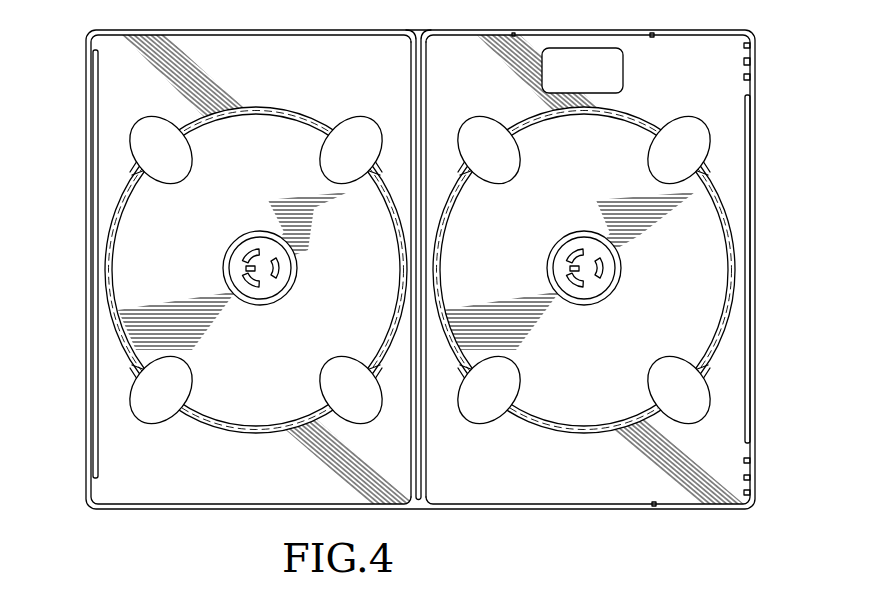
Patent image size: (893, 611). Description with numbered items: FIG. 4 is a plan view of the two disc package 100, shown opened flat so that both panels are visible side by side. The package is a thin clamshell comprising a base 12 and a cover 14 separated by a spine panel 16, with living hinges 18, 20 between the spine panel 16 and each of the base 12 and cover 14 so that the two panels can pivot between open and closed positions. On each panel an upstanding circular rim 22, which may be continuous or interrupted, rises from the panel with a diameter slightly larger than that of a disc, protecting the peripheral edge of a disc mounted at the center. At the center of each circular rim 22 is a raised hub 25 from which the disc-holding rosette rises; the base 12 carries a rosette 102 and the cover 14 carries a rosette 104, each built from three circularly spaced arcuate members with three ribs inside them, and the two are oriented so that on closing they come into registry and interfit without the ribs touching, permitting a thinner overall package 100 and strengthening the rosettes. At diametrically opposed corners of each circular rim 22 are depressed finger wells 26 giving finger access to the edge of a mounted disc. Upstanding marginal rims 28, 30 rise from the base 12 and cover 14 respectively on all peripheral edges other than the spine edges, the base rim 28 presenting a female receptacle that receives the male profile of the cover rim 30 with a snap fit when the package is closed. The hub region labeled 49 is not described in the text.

The two disc package 100 is at (95, 526).
The base 12 is at (639, 511).
The cover 14 is at (211, 509).
The spine panel 16 is at (424, 488).
The living hinge 18 is at (432, 443).
The living hinge 20 is at (416, 452).
The upstanding circular rim 22 is at (305, 110).
The raised hub 25 is at (608, 282).
The depressed finger well 26 is at (489, 135).
The base rim 28 is at (757, 56).
The cover rim 30 is at (122, 42).
The hub of second cover 49 is at (284, 282).
The rosette 102 is at (602, 261).
The rosette 104 is at (278, 261).